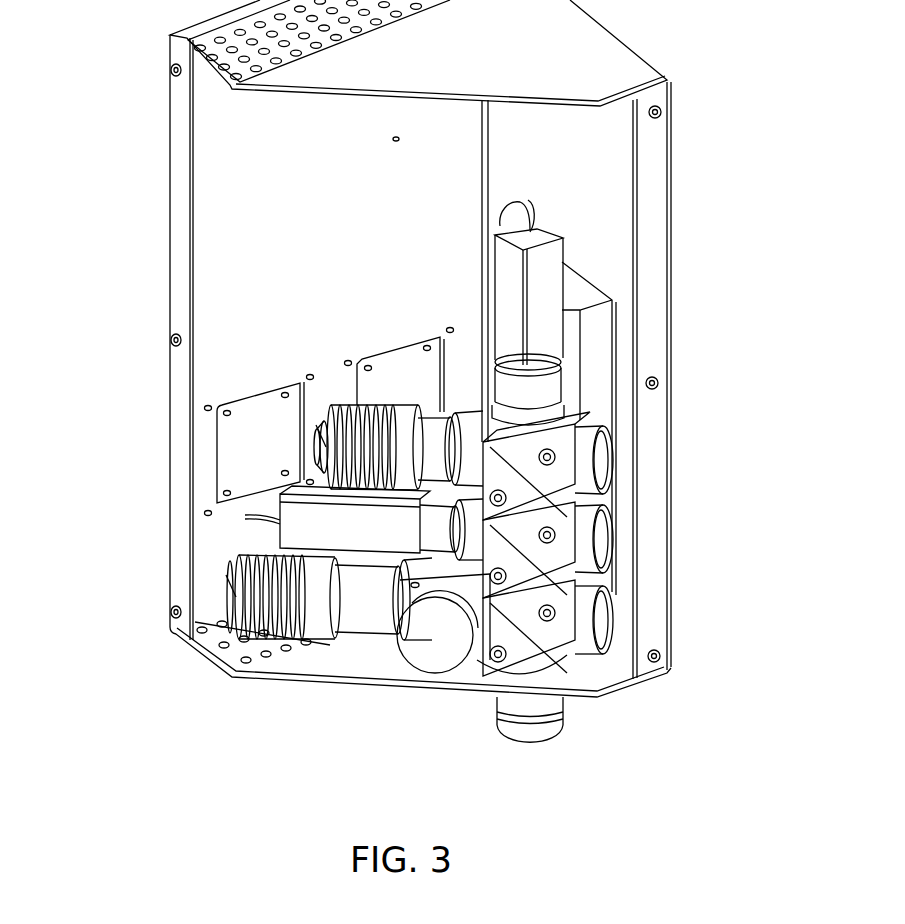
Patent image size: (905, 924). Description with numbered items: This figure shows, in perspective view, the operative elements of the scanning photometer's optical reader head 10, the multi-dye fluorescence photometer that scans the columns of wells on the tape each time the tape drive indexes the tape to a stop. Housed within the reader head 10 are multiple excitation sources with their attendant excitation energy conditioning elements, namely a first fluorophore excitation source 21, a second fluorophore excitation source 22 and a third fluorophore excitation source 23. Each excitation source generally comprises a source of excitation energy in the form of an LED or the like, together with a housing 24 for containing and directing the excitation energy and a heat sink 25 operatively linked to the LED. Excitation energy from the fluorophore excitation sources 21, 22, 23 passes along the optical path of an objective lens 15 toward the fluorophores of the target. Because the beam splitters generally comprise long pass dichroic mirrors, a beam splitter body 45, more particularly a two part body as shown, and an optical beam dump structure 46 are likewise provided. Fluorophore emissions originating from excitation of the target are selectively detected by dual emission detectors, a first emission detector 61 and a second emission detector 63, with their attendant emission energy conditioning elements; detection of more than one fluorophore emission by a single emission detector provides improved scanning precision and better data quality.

The optical reader head 10 is at (358, 348).
The objective lens 15 is at (448, 745).
The first fluorophore excitation source 21 is at (298, 505).
The second fluorophore excitation source 22 is at (194, 649).
The third fluorophore excitation source 23 is at (337, 437).
The housing 24 is at (340, 407).
The heat sink 25 is at (310, 454).
The beam splitter body 45 is at (560, 490).
The optical beam dump structure 46 is at (580, 443).
The first emission detector 61 is at (300, 516).
The second emission detector 63 is at (613, 263).